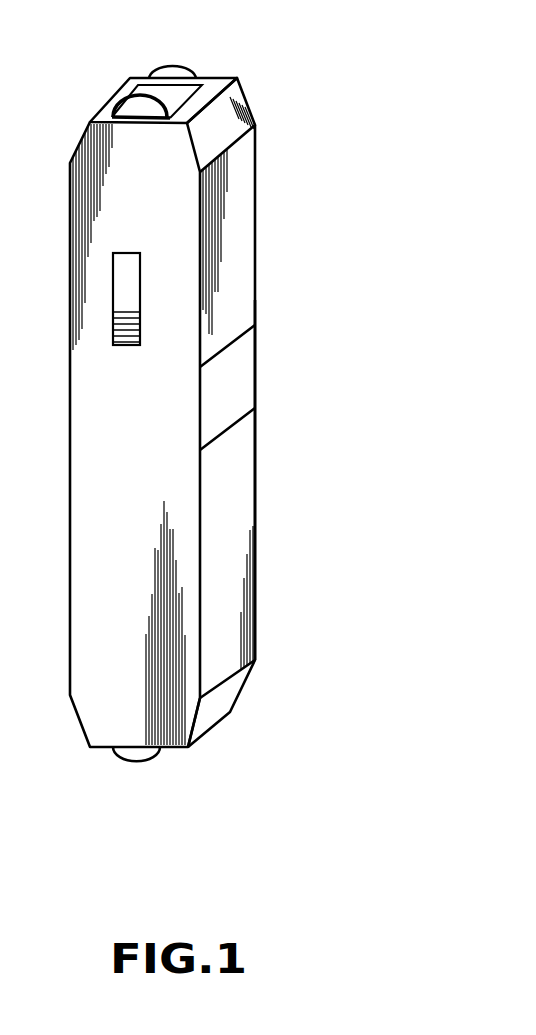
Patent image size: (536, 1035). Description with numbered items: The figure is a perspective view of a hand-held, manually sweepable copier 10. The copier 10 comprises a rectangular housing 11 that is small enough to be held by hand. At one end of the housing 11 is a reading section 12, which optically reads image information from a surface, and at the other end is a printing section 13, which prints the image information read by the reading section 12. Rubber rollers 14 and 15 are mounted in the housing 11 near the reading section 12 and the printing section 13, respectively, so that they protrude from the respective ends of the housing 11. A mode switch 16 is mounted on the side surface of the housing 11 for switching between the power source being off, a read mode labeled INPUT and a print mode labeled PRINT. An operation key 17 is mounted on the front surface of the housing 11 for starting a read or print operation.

The copier 10 is at (272, 285).
The housing 11 is at (247, 495).
The reading section 12 is at (203, 98).
The printing section 13 is at (175, 747).
The rubber roller 14 is at (138, 98).
The rubber roller 15 is at (137, 758).
The mode switch 16 is at (120, 345).
The operation key 17 is at (237, 377).